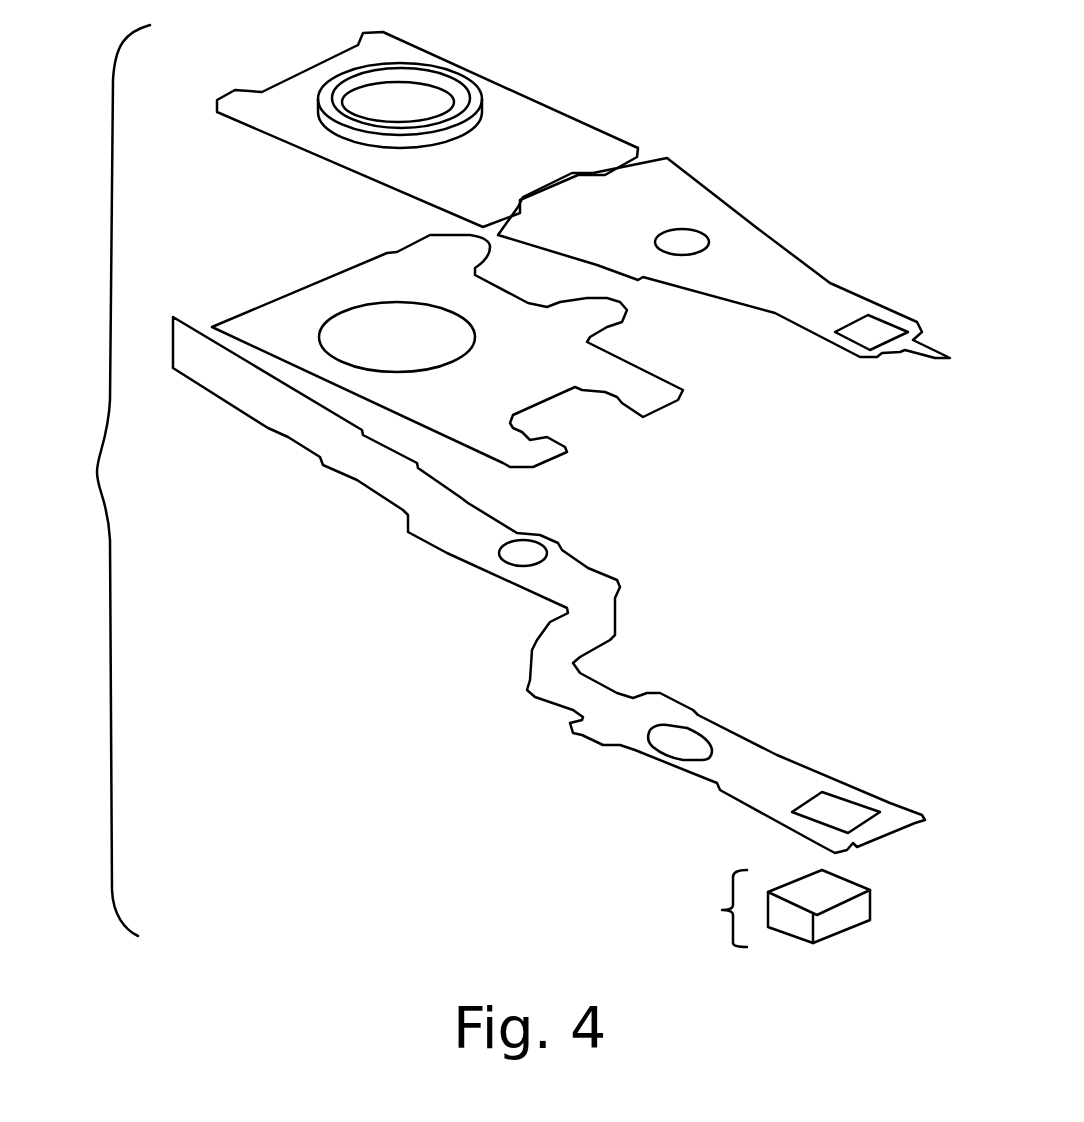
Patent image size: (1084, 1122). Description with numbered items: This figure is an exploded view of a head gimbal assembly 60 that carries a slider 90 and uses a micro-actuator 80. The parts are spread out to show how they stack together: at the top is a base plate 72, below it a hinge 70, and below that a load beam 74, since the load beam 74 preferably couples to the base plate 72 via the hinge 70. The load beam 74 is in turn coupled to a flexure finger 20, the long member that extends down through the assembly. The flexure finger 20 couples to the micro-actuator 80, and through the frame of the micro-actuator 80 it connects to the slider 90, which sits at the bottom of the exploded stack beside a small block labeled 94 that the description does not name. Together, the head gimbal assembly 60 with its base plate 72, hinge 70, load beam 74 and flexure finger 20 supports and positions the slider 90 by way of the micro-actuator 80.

The flexure finger 20 is at (448, 555).
The head gimbal assembly 60 is at (96, 480).
The hinge 70 is at (640, 370).
The base plate 72 is at (628, 137).
The load beam 74 is at (828, 283).
The micro-actuator 80 is at (810, 800).
The slider 90 is at (799, 910).
The slider 94 is at (848, 923).